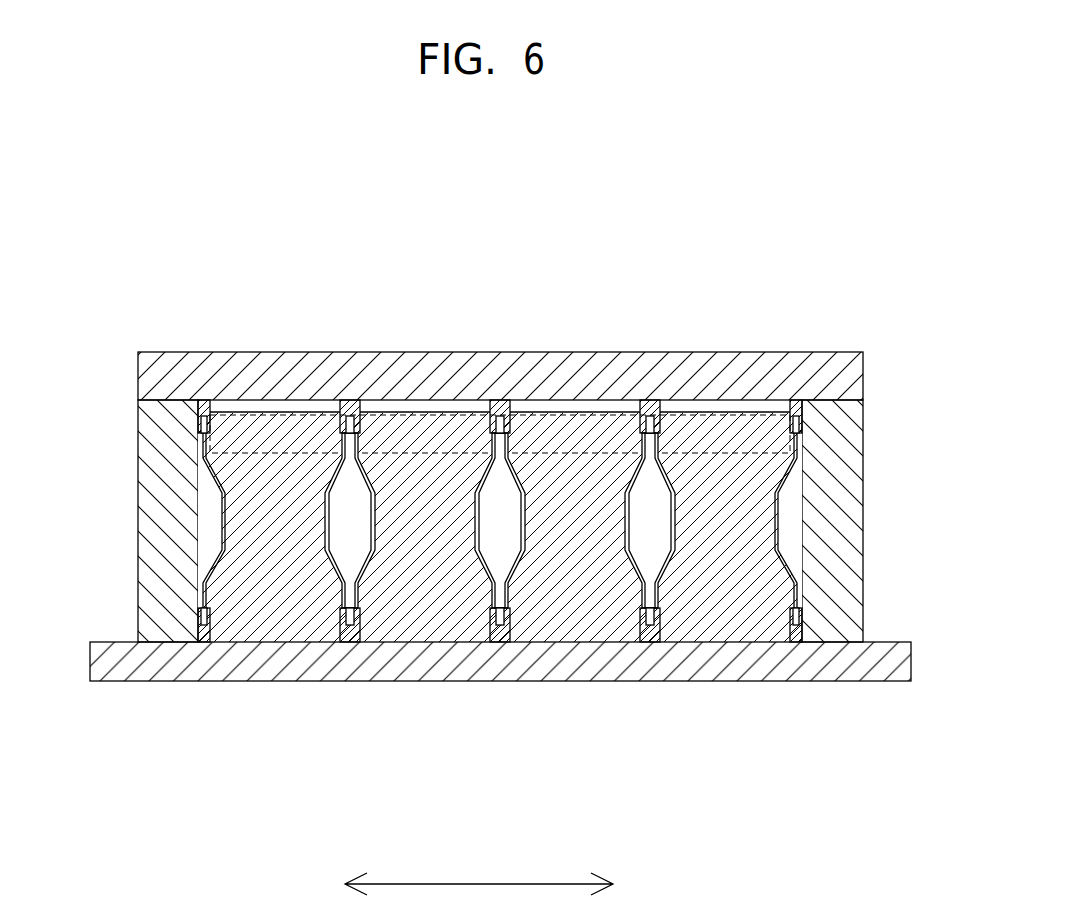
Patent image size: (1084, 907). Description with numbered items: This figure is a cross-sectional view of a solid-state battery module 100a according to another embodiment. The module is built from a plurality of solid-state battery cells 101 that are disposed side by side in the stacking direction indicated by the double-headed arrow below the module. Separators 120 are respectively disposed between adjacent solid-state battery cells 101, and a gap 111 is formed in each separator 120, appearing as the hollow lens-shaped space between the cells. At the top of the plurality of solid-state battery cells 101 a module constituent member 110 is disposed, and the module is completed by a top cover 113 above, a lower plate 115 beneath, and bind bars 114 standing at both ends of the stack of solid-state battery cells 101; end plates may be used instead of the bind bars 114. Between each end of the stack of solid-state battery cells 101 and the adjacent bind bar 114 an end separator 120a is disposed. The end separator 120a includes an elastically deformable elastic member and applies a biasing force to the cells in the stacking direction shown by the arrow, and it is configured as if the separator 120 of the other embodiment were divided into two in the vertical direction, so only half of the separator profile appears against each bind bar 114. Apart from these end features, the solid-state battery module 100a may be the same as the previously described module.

The solid-state battery module 100a is at (862, 263).
The solid-state battery cells 101 is at (248, 588).
The module constituent member 110 is at (570, 430).
The gap 111 is at (345, 505).
The top cover 113 is at (698, 372).
The bind bars 114 is at (162, 472).
The lower plate 115 is at (880, 655).
The separators 120 is at (348, 642).
The end separator 120a is at (203, 642).